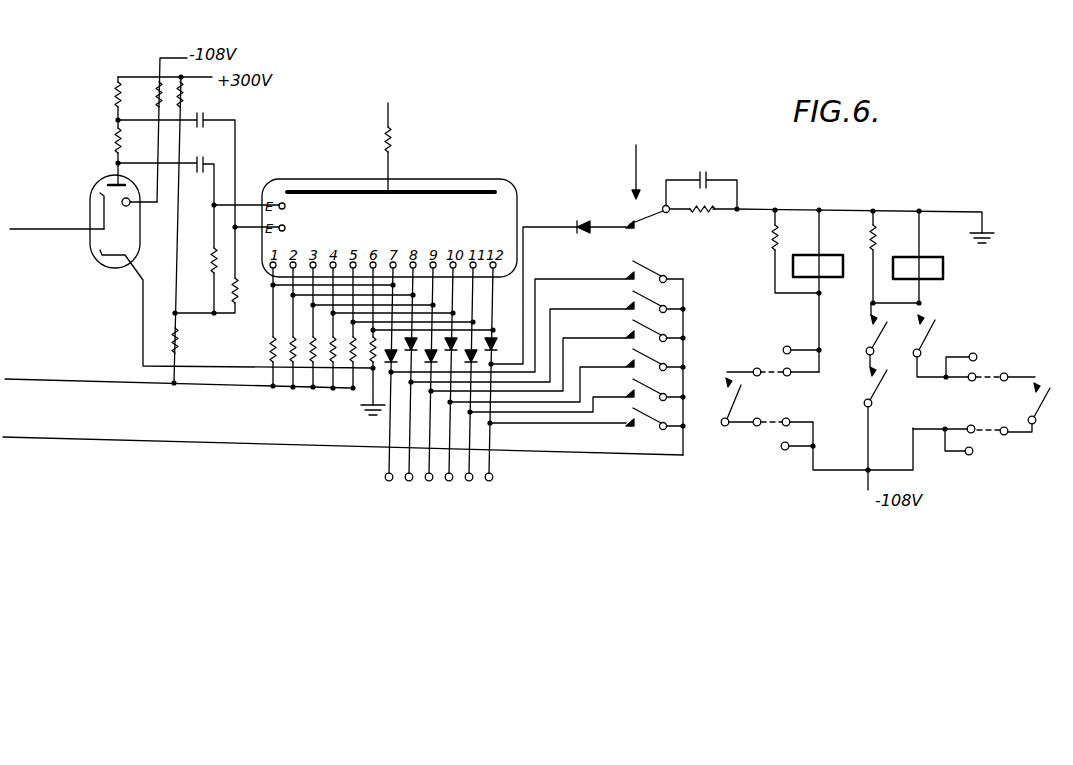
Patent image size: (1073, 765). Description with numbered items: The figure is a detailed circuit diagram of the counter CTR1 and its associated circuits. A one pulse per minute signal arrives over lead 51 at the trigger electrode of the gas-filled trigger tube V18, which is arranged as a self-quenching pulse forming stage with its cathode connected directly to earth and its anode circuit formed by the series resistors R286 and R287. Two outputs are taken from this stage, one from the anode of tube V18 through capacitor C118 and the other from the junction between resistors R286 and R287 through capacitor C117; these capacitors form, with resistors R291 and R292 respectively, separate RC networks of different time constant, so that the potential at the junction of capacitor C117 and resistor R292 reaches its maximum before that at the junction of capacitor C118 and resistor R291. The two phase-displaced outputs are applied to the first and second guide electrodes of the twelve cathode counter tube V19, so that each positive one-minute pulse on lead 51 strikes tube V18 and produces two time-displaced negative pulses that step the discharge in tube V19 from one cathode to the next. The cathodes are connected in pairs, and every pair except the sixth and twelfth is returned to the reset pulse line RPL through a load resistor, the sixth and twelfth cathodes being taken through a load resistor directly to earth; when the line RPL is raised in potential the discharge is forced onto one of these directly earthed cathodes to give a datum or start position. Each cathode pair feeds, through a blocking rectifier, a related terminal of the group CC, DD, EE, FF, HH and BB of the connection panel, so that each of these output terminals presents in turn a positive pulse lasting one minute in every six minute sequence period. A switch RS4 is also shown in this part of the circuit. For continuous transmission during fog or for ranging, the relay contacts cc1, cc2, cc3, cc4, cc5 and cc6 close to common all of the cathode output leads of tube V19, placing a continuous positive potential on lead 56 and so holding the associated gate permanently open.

The lead 51 is at (52, 231).
The lead 56 is at (52, 439).
The reset pulse line RPL is at (106, 386).
The gas-filled trigger tube V18 is at (231, 271).
The twelve cathode counter tube V19 is at (391, 146).
The counter CTR1 is at (389, 208).
The switch RS4 is at (634, 175).
The series resistor R286 is at (97, 93).
The series resistor R287 is at (97, 150).
The resistor R291 is at (198, 259).
The resistor R292 is at (222, 270).
The capacitor C117 is at (181, 163).
The capacitor C118 is at (172, 173).
The relay contact cc1 is at (658, 269).
The relay contact cc2 is at (658, 299).
The relay contact cc3 is at (658, 328).
The relay contact cc4 is at (658, 357).
The relay contact cc5 is at (658, 387).
The relay contact cc6 is at (658, 416).
The output terminal CC is at (380, 490).
The output terminal DD is at (408, 481).
The output terminal EE is at (427, 490).
The output terminal FF is at (448, 481).
The output terminal HH is at (472, 490).
The output terminal BB is at (488, 481).